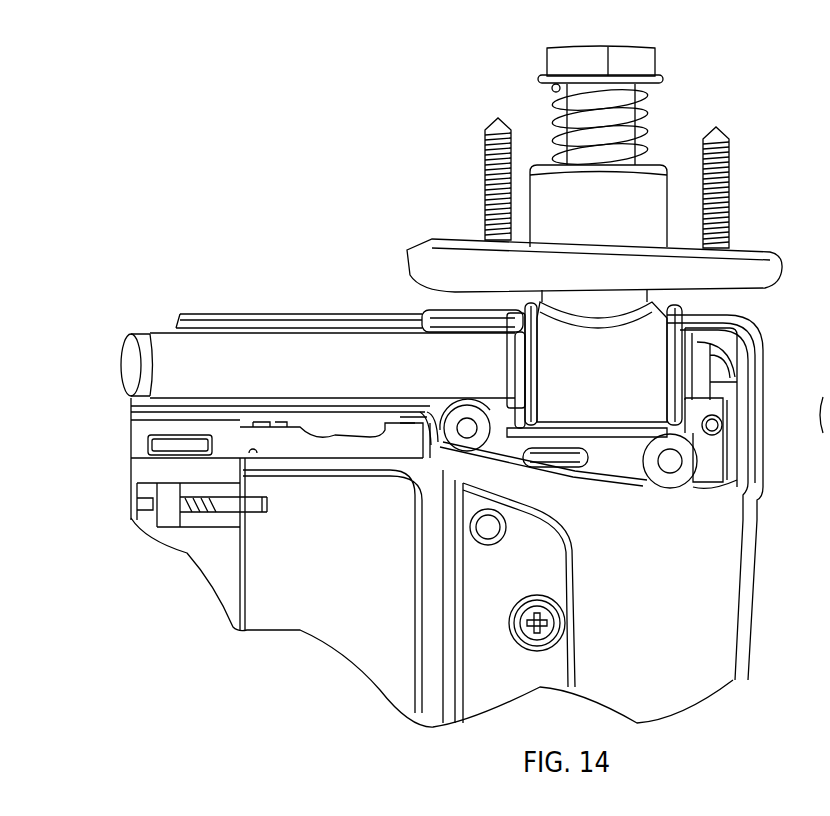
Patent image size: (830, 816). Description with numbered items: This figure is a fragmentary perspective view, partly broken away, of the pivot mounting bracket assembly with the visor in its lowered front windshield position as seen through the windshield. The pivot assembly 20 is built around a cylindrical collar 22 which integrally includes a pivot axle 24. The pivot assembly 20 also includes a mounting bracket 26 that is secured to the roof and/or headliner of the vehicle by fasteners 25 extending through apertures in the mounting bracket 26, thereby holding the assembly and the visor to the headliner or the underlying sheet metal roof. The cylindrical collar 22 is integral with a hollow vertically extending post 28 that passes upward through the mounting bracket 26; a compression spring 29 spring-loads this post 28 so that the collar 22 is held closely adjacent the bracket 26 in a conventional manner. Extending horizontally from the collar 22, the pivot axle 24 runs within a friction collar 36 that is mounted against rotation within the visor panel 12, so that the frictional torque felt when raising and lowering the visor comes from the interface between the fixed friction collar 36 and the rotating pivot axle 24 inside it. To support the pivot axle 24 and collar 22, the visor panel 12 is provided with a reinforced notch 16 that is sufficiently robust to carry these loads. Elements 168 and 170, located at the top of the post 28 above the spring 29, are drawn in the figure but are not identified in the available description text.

The visor panel 12 is at (720, 595).
The reinforced notch 16 is at (620, 418).
The pivot assembly 20 is at (386, 245).
The cylindrical collar 22 is at (613, 384).
The pivot axle 24 is at (128, 353).
The fasteners 25 is at (483, 147).
The mounting bracket 26 is at (768, 268).
The hollow vertically extending post 28 is at (601, 306).
The compression spring 29 is at (650, 108).
The friction collar 36 is at (205, 347).
The washer 168 is at (537, 78).
The bolt head 170 is at (638, 47).